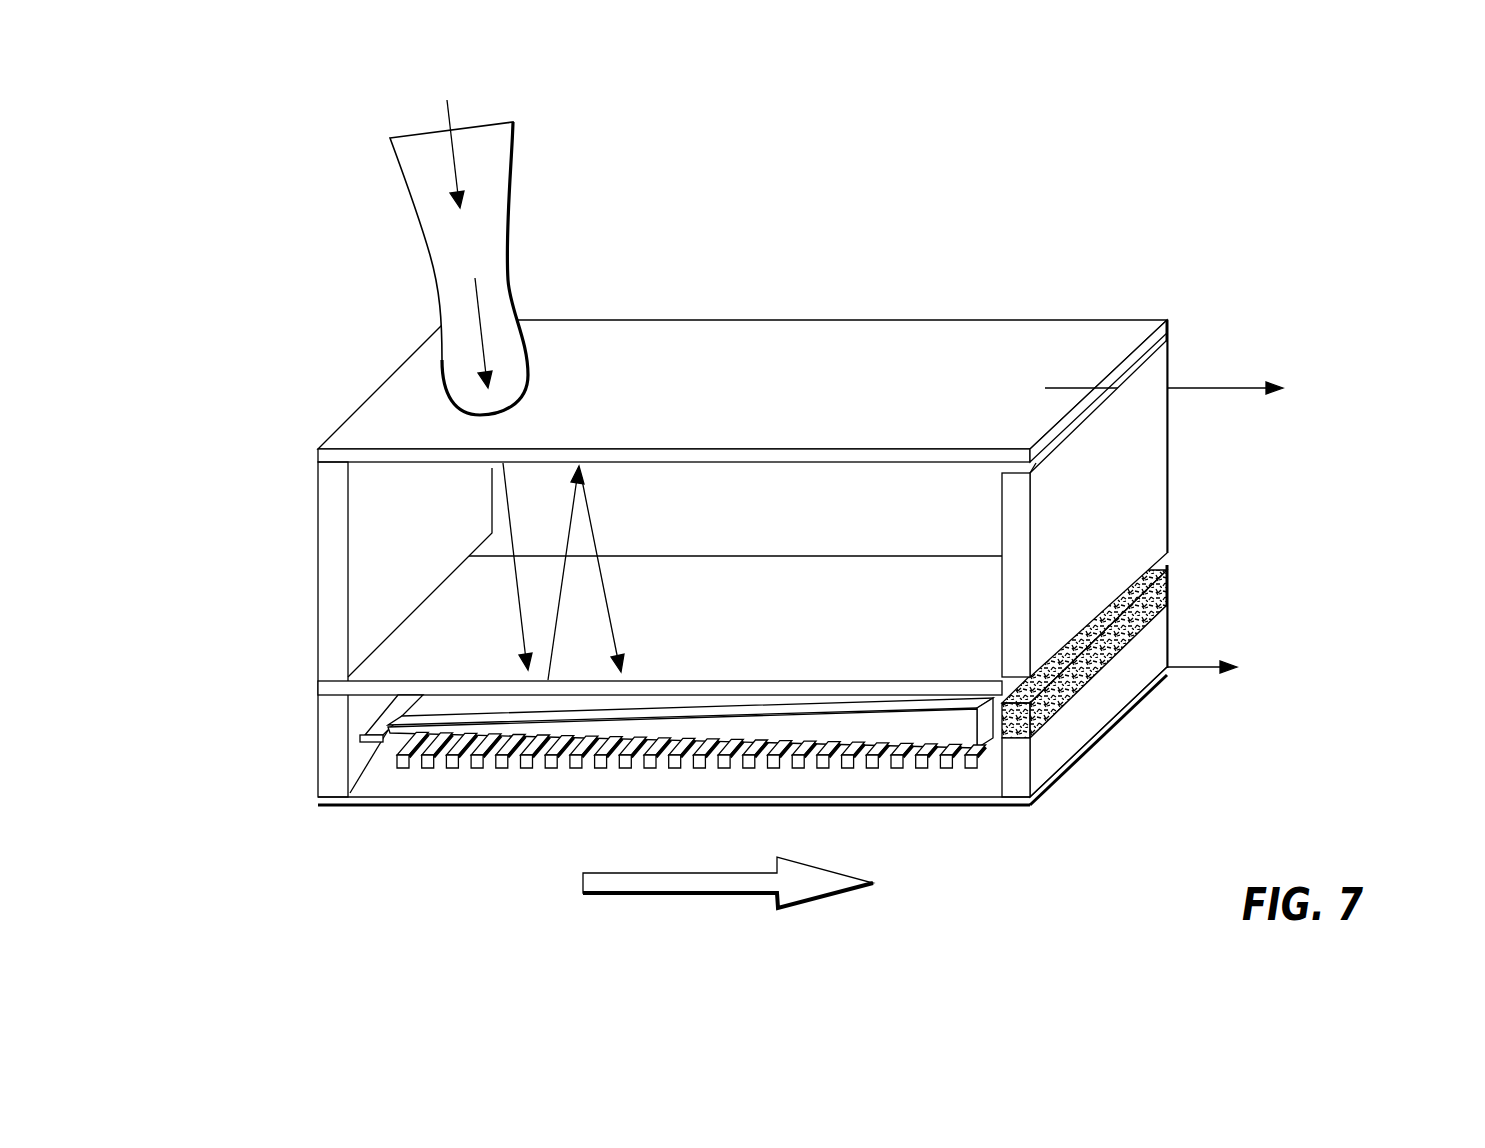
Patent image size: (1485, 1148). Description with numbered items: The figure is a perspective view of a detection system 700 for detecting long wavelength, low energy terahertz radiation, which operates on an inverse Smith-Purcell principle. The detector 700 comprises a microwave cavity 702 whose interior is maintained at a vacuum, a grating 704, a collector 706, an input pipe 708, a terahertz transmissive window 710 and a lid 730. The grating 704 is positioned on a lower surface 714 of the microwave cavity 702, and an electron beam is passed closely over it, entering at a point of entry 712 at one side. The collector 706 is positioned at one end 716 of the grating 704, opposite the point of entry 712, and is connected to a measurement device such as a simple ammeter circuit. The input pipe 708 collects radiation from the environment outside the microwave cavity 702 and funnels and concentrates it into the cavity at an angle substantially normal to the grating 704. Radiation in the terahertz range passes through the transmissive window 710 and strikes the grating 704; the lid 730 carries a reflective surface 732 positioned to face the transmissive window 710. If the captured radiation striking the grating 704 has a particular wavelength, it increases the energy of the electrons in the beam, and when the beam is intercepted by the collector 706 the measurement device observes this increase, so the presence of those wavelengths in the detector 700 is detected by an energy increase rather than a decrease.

The detection system 700 is at (805, 504).
The microwave cavity 702 is at (350, 420).
The grating 704 is at (523, 770).
The collector 706 is at (1160, 620).
The input pipe 708 is at (512, 250).
The terahertz transmissive window 710 is at (447, 688).
The point of entry 712 is at (362, 738).
The lower surface 714 is at (648, 788).
The end of the grating 716 is at (1003, 758).
The lid 730 is at (1027, 338).
The reflective surface 732 is at (720, 471).